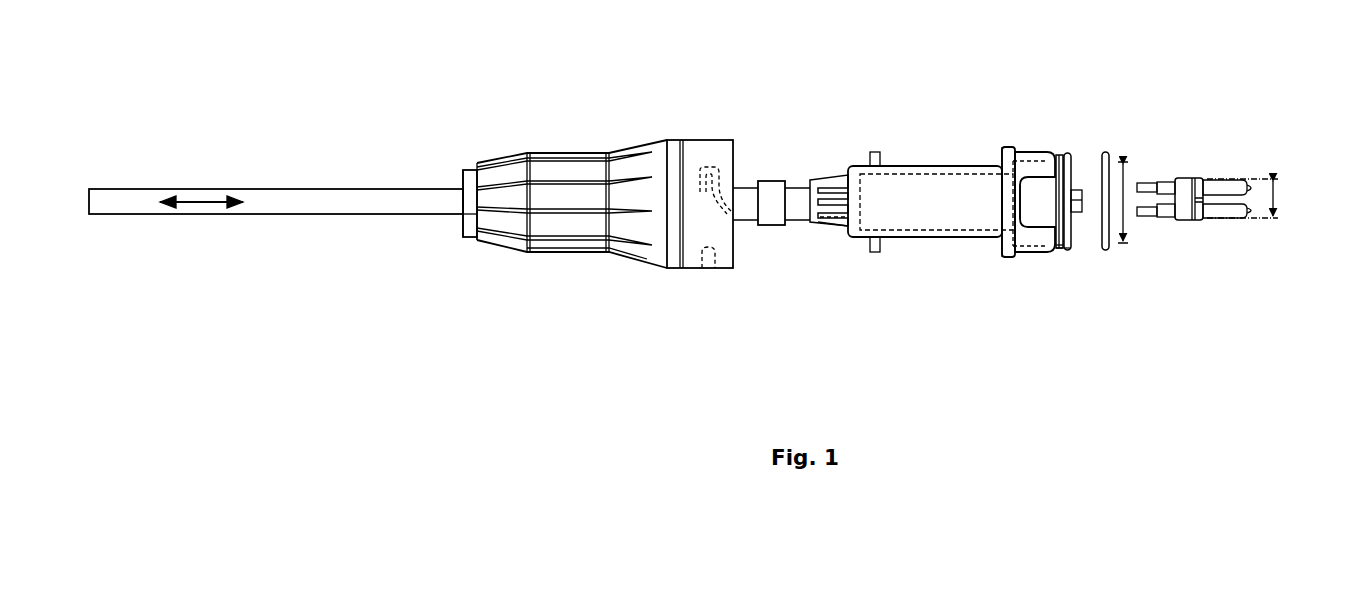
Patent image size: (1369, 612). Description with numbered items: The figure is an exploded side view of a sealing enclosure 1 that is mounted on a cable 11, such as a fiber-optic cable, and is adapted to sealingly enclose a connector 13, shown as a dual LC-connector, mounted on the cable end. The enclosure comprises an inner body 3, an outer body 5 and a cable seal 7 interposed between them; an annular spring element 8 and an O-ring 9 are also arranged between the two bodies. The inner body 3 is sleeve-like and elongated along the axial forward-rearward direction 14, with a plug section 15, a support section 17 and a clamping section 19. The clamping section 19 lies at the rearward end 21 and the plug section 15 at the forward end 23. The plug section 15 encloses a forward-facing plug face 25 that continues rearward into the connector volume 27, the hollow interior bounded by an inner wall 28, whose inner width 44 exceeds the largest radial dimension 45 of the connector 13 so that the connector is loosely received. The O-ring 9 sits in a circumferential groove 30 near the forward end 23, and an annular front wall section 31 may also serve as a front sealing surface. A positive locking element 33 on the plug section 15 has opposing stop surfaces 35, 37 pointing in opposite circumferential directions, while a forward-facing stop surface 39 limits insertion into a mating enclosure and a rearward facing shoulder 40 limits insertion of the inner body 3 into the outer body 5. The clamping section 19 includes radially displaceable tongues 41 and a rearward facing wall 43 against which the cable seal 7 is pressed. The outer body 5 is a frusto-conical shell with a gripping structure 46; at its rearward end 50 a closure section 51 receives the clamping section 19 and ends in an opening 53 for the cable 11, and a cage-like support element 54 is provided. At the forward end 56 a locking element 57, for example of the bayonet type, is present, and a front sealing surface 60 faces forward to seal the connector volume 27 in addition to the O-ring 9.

The sealing enclosure 1 is at (555, 60).
The inner body 3 is at (951, 204).
The outer body 5 is at (672, 113).
The cable seal 7 is at (775, 175).
The annular spring element 8 is at (878, 150).
The O-ring 9 is at (1109, 150).
The cable 11 is at (308, 198).
The connector 13 is at (1235, 164).
The forward-rearward direction 14 is at (204, 195).
The plug section 15 is at (1114, 193).
The support section 17 is at (909, 148).
The clamping section 19 is at (826, 160).
The rearward end 21 is at (808, 232).
The forward end 23 is at (1080, 248).
The plug face 25 is at (1075, 169).
The connector volume 27 is at (1077, 223).
The inner wall 28 is at (925, 237).
The circumferential groove 30 is at (1061, 259).
The annular front wall section 31 is at (1064, 152).
The positive locking element 33 is at (1019, 229).
The stop surface 35 is at (1029, 188).
The stop surface 37 is at (1036, 145).
The stop surface 39 is at (1063, 246).
The rearward facing shoulder 40 is at (997, 155).
The tongues 41 is at (822, 220).
The rearward facing wall 43 is at (842, 230).
The inner width 44 is at (1125, 222).
The largest radial dimension 45 is at (1277, 199).
The gripping structure 46 is at (594, 148).
The rearward end 50 is at (449, 179).
The closure section 51 is at (471, 255).
The opening 53 is at (454, 229).
The support element 54 is at (469, 170).
The forward end 56 is at (710, 285).
The locking element 57 is at (727, 215).
The front sealing surface 60 is at (743, 139).